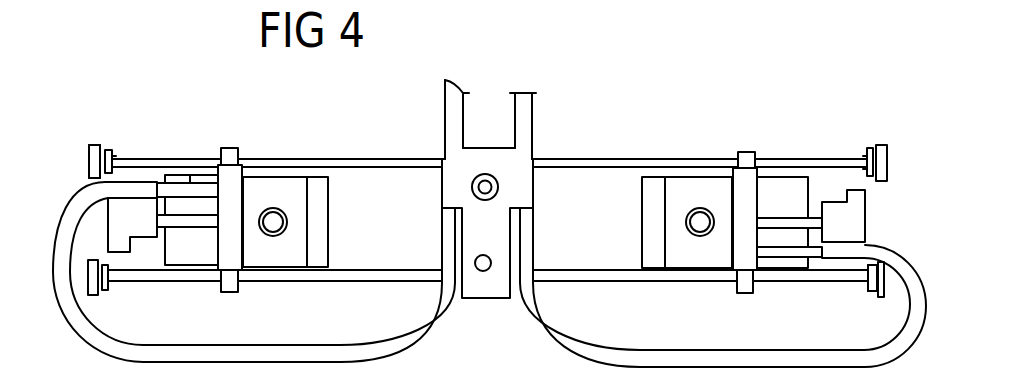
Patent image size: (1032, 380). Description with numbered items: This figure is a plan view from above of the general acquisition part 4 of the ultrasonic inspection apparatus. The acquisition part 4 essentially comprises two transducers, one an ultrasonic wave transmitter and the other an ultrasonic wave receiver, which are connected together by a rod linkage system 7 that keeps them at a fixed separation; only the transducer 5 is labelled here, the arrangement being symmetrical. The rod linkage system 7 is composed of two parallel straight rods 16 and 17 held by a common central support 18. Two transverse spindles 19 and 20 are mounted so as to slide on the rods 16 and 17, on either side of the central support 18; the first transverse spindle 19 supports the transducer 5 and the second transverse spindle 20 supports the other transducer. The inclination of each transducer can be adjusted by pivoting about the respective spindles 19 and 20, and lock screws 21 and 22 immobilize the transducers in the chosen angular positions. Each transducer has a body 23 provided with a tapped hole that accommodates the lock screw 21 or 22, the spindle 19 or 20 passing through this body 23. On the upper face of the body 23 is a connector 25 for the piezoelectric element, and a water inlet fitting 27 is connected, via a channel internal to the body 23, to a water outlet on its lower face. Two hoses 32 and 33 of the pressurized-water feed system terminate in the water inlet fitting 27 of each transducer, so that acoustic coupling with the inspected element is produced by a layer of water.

The acquisition part 4 is at (681, 133).
The transducer 5 is at (283, 175).
The rod linkage system 7 is at (370, 158).
The rod 16 is at (366, 285).
The rod 17 is at (614, 156).
The central support 18 is at (490, 288).
The first transverse spindle 19 is at (238, 148).
The second transverse spindle 20 is at (753, 157).
The lock screw 21 is at (125, 215).
The lock screw 22 is at (847, 227).
The body 23 is at (292, 223).
The connector 25 is at (683, 220).
The water inlet fitting 27 is at (193, 157).
The hose 32 is at (445, 110).
The hose 33 is at (532, 128).